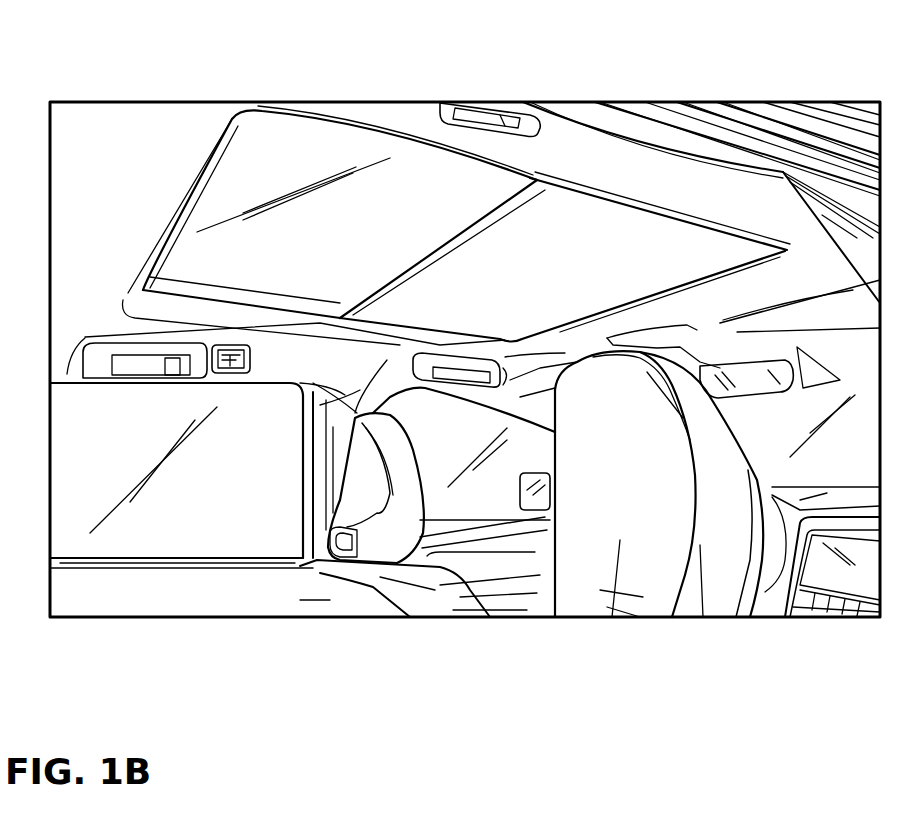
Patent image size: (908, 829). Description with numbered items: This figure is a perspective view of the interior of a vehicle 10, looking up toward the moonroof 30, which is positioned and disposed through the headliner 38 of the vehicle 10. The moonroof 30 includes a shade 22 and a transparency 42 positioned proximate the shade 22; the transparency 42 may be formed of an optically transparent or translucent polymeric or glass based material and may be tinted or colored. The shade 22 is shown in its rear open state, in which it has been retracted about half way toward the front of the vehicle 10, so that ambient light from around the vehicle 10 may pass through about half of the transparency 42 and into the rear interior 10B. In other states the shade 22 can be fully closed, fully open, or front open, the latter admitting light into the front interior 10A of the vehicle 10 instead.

The vehicle 10 is at (652, 76).
The front interior 10A is at (462, 564).
The rear interior 10B is at (214, 578).
The shade 22 is at (501, 271).
The moonroof 30 is at (202, 158).
The headliner 38 is at (562, 160).
The transparency 42 is at (318, 170).